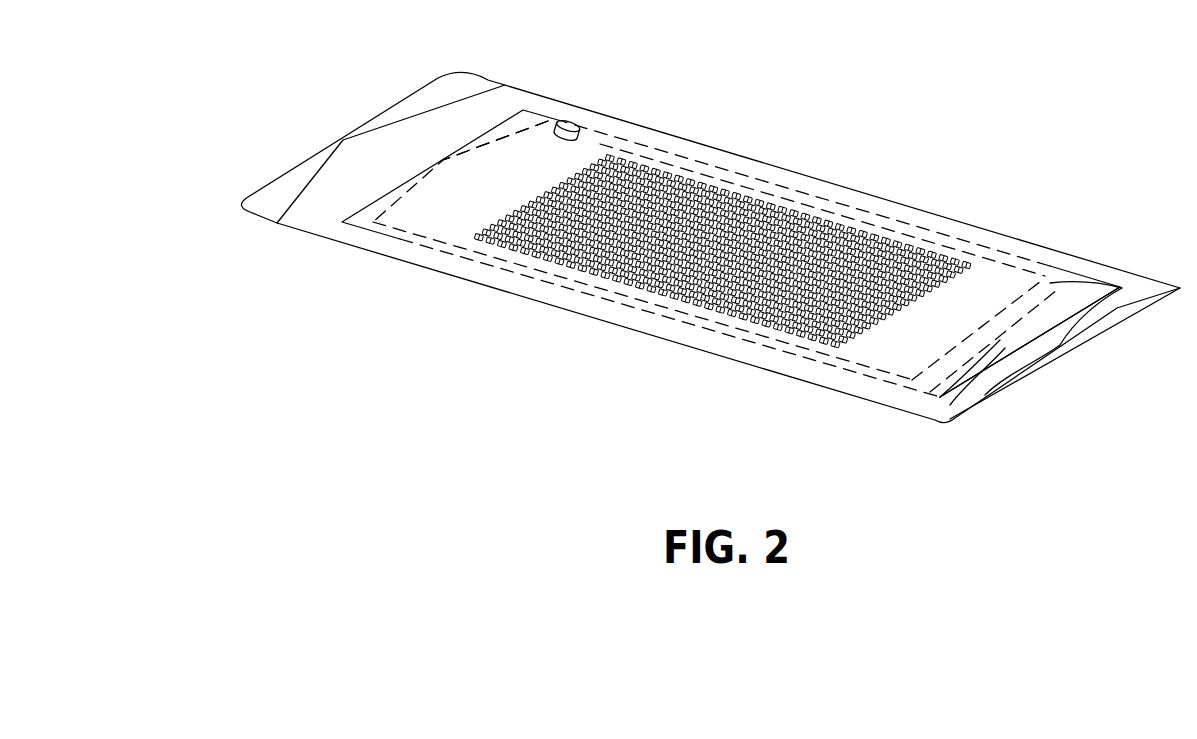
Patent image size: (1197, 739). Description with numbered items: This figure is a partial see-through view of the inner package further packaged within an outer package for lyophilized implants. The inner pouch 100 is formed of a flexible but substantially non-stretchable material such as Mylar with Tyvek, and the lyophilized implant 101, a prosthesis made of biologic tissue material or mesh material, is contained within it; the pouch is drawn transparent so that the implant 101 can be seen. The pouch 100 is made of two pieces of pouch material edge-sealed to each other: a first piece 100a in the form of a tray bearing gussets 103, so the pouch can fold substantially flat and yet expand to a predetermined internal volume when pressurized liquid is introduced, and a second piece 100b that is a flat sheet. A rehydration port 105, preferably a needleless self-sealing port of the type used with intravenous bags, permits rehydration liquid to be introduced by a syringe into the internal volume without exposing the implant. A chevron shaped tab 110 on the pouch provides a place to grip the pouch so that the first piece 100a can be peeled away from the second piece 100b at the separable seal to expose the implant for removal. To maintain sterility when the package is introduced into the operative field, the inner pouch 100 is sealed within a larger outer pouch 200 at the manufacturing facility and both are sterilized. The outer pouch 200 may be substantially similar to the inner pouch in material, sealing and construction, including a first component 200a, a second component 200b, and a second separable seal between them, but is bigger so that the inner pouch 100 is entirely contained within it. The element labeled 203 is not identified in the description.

The pouch 100 is at (763, 350).
The first piece 100a is at (917, 410).
The second piece 100b is at (908, 376).
The implant 101 is at (553, 198).
The gussets 103 is at (1000, 362).
The rehydration port 105 is at (566, 118).
The chevron shaped tab 110 is at (495, 157).
The outer pouch 200 is at (258, 208).
The first component 200a is at (456, 296).
The second component 200b is at (368, 234).
The tab of cover 203 is at (1087, 348).